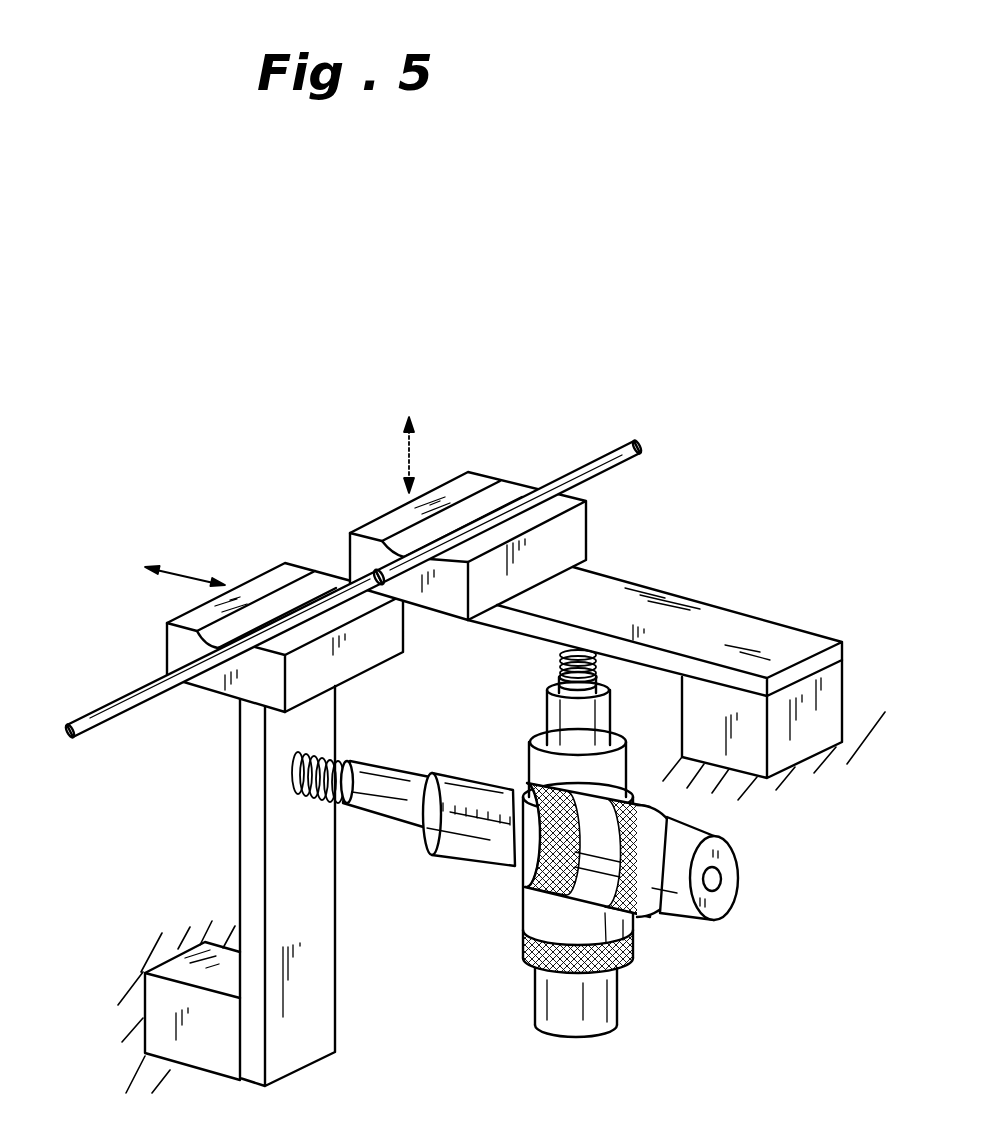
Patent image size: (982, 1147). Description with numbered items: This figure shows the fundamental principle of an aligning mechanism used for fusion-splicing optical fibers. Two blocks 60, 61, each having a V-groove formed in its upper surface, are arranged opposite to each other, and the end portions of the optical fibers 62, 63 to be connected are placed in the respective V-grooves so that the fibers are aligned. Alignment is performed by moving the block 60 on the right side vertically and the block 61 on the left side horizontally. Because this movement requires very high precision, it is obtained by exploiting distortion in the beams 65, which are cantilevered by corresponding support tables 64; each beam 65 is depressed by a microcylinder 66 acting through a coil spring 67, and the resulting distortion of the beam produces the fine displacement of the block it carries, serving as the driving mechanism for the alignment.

The block 60 is at (478, 478).
The block 61 is at (263, 592).
The optical fiber 62 is at (618, 438).
The optical fiber 63 is at (92, 718).
The support table 64 is at (138, 1000).
The beam 65 is at (703, 607).
The microcylinder 66 is at (677, 890).
The coil spring 67 is at (337, 758).